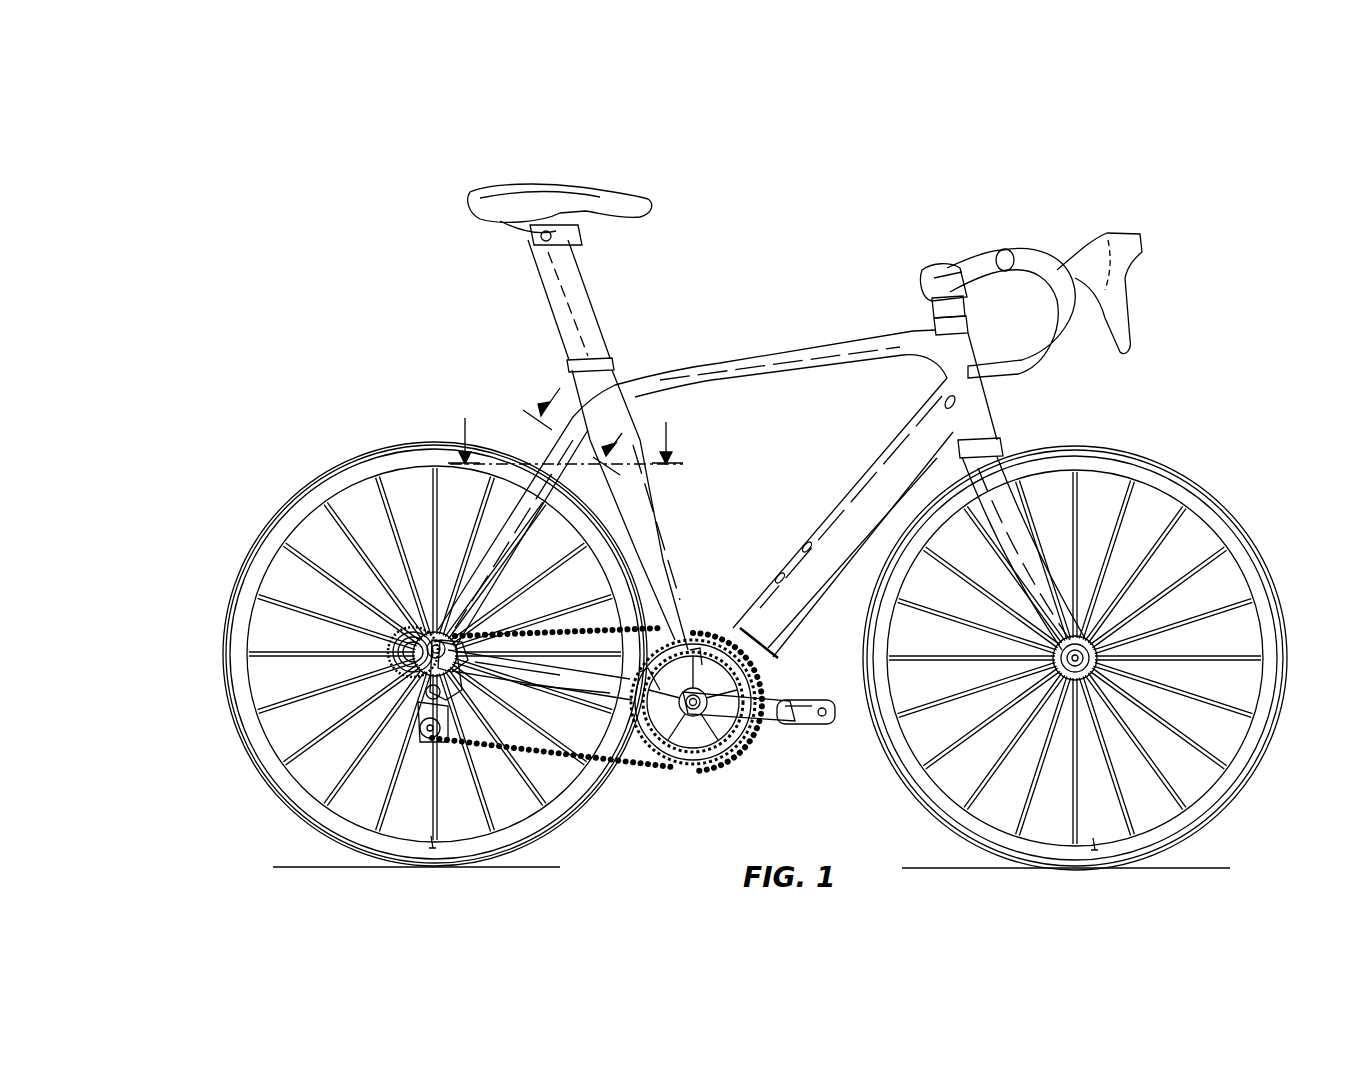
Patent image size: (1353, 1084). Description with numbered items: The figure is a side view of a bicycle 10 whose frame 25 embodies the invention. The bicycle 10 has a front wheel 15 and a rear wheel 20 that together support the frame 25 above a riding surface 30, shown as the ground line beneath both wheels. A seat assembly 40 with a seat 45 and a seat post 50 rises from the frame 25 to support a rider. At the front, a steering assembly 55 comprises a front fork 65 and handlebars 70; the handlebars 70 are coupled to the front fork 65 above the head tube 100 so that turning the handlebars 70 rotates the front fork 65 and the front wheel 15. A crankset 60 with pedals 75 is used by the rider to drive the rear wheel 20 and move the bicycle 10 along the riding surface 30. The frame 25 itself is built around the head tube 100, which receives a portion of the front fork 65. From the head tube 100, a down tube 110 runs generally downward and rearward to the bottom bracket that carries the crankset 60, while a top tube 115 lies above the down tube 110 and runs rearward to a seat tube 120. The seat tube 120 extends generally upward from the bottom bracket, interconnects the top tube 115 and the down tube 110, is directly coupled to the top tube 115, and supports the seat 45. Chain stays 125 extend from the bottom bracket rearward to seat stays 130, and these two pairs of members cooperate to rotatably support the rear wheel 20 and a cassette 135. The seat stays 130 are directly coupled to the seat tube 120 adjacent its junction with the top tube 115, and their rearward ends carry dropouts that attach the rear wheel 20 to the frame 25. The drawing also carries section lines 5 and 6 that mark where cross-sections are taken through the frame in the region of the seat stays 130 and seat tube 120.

The bicycle 10 is at (1063, 144).
The front wheel 15 is at (1178, 488).
The rear wheel 20 is at (330, 486).
The frame 25 is at (932, 332).
The riding surface 30 is at (295, 867).
The seat assembly 40 is at (527, 240).
The seat 45 is at (598, 197).
The seat post 50 is at (577, 298).
The steering assembly 55 is at (950, 270).
The crankset 60 is at (693, 741).
The front fork 65 is at (1008, 456).
The handlebars 70 is at (1036, 268).
The pedals 75 is at (826, 725).
The head tube 100 is at (977, 403).
The down tube 110 is at (843, 527).
The top tube 115 is at (737, 362).
The seat tube 120 is at (648, 530).
The chain stays 125 is at (600, 697).
The seat stays 130 is at (540, 470).
The cassette 135 is at (405, 647).
The section line 5- 5 is at (565, 428).
The section line 6- 6 is at (582, 417).